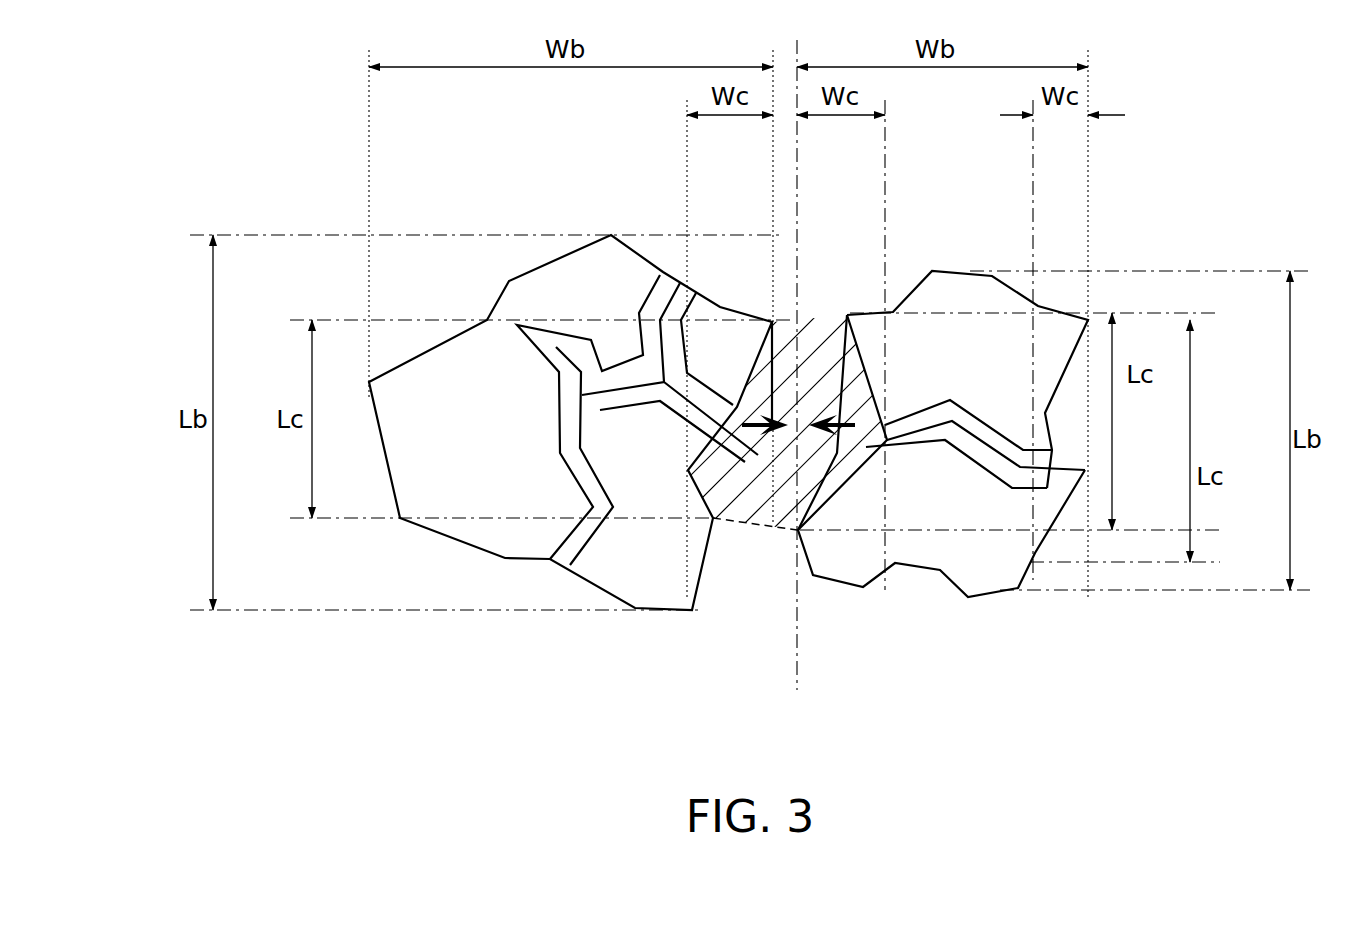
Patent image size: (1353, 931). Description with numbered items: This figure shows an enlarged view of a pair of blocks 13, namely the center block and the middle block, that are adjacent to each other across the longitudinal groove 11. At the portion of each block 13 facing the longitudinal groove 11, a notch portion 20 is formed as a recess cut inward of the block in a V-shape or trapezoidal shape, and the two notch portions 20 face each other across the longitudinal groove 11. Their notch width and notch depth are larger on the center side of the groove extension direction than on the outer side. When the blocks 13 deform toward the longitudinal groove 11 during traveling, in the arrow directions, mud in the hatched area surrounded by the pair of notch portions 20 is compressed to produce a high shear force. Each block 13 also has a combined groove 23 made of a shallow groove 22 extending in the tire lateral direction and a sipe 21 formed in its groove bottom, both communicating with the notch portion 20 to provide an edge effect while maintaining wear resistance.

The longitudinal groove 11 is at (790, 453).
The block 13 is at (518, 298).
The notch portion 20 is at (850, 383).
The sipe 21 is at (617, 525).
The shallow groove 22 is at (618, 530).
The combined groove 23 is at (560, 693).